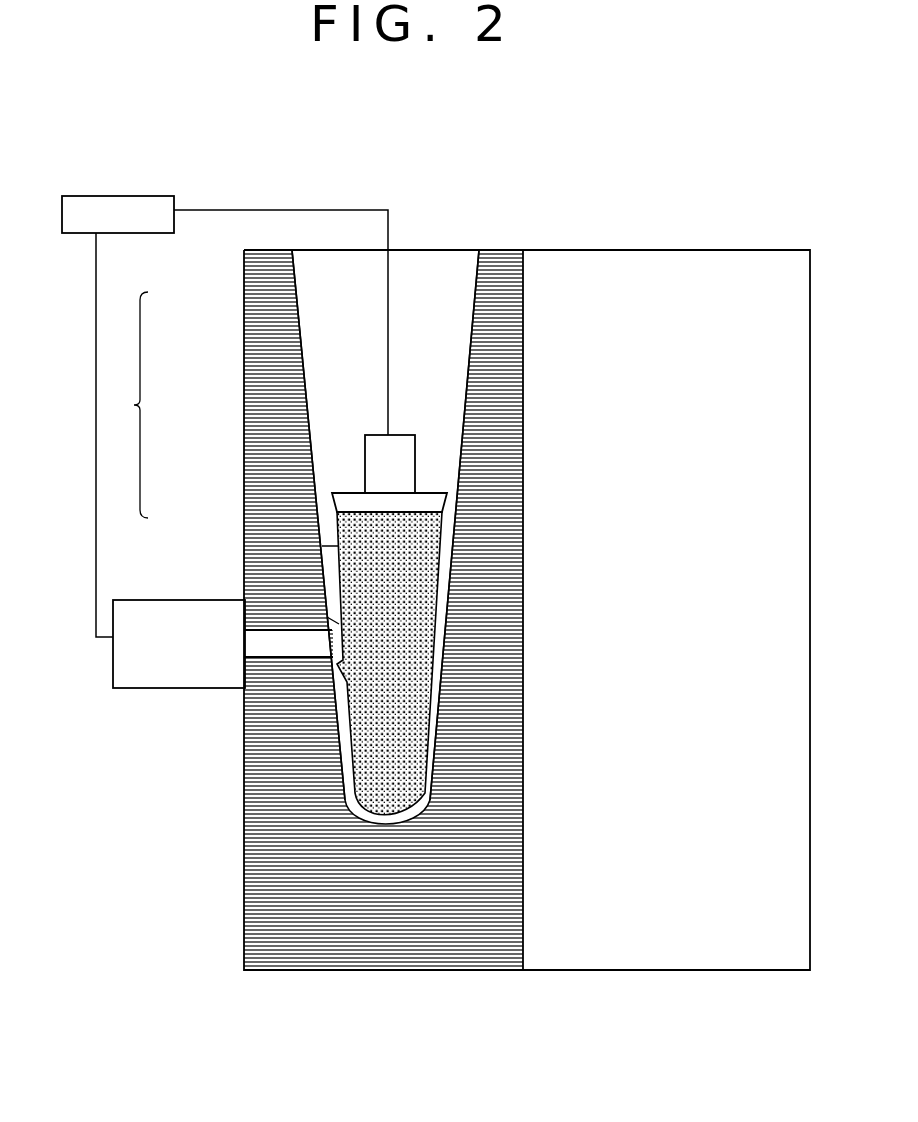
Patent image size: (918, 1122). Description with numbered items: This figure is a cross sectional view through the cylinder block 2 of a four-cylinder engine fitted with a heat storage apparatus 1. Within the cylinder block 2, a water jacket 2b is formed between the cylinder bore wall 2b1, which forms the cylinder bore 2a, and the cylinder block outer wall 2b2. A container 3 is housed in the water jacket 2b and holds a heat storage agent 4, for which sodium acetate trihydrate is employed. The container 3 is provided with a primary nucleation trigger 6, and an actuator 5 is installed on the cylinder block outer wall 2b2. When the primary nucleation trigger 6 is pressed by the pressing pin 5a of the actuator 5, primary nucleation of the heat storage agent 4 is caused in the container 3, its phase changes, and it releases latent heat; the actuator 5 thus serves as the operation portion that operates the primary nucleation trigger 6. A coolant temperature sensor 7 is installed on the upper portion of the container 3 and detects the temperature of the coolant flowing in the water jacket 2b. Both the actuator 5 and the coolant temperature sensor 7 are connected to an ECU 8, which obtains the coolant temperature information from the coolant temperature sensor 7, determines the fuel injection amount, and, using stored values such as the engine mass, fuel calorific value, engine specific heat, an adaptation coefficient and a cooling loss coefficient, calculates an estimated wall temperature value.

The heat storage apparatus 1 is at (131, 405).
The cylinder block 2 is at (418, 972).
The cylinder bore 2a is at (609, 943).
The water jacket 2b is at (448, 278).
The cylinder bore wall 2b1 is at (500, 250).
The cylinder block outer wall 2b2 is at (244, 288).
The container 3 is at (336, 508).
The heat storage agent 4 is at (353, 553).
The actuator 5 is at (188, 613).
The pressing pin 5a is at (298, 643).
The primary nucleation trigger 6 is at (327, 612).
The coolant temperature sensor 7 is at (360, 453).
The ECU 8 is at (152, 212).